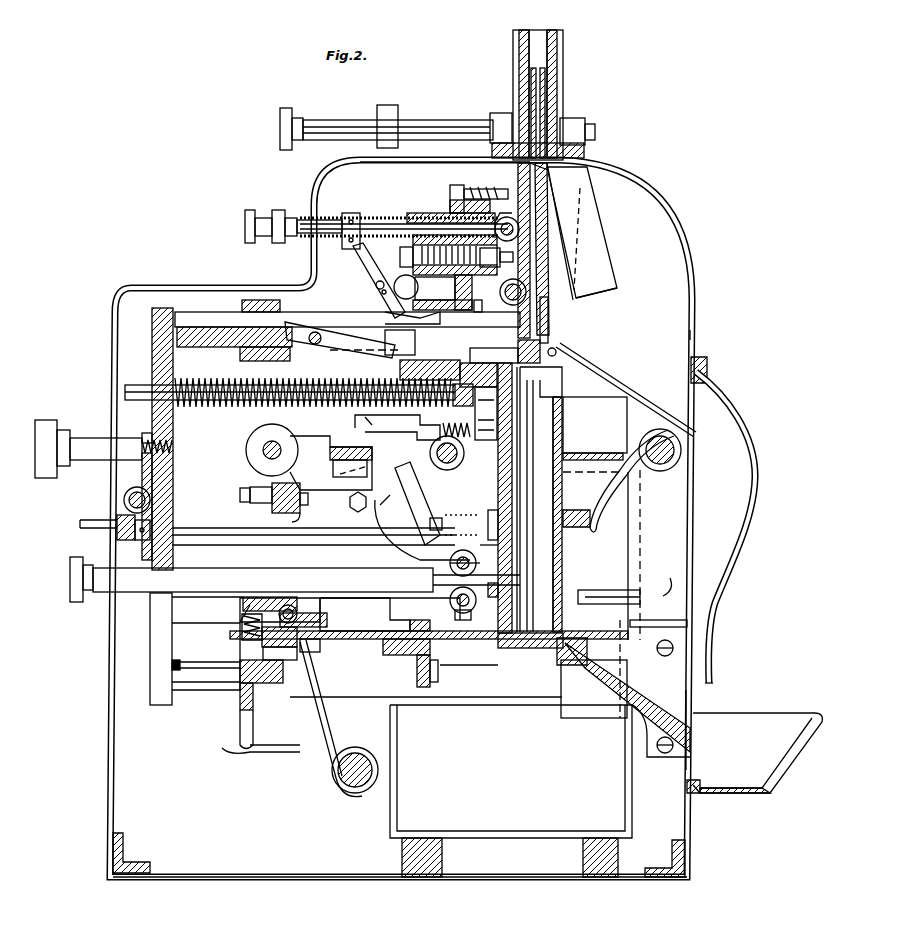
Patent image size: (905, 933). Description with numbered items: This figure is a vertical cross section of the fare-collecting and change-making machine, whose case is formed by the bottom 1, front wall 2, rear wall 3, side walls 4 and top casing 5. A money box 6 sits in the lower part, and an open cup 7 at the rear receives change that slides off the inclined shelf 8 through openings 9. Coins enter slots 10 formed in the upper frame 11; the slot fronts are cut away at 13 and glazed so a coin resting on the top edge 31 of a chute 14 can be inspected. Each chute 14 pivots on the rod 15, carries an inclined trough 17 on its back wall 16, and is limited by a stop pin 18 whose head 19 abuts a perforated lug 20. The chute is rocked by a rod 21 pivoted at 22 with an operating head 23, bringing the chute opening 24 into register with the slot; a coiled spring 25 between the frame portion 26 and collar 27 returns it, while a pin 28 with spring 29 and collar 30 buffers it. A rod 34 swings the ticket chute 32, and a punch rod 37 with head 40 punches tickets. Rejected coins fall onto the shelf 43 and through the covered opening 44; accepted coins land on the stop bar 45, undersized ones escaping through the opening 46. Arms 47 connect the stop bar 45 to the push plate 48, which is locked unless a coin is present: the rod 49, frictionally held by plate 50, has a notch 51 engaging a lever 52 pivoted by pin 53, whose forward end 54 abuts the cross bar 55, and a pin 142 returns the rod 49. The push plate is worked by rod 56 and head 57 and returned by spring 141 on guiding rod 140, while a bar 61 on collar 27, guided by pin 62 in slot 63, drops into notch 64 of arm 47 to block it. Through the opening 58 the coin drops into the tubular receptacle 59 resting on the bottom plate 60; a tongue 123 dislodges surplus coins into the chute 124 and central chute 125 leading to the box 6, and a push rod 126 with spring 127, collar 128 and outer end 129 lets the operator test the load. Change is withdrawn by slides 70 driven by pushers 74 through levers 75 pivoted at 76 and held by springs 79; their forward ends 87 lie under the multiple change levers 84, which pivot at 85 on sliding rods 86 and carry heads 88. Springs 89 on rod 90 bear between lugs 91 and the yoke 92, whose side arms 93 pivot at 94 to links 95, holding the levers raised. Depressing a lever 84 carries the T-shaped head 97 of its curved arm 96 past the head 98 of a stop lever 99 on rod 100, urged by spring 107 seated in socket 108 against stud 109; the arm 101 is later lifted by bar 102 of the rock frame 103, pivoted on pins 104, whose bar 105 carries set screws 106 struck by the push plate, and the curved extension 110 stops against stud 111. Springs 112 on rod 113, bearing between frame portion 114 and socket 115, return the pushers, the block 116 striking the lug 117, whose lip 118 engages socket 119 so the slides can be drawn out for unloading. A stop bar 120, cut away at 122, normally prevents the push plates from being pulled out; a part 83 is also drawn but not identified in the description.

The bottom 1 is at (236, 878).
The front wall 2 is at (108, 755).
The rear wall 3 is at (695, 335).
The side walls 4 is at (164, 836).
The top casing 5 is at (352, 160).
The money box 6 is at (396, 802).
The open trough or elongated cup 7 is at (775, 715).
The inclined shelf 8 is at (640, 704).
The openings 9 is at (698, 712).
The slots 10 is at (540, 32).
The upper frame 11 is at (528, 85).
The cut away portion with glass window 13 is at (532, 100).
The chutes 14 is at (517, 180).
The rod 15 is at (500, 296).
The back wall 16 is at (560, 231).
The inclined trough 17 is at (549, 210).
The stop pin 18 is at (452, 196).
The head 19 is at (452, 190).
The perforated lug 20 is at (478, 188).
The rod 21 is at (380, 220).
The pivot 22 is at (548, 232).
The operating head 23 is at (282, 212).
The chute opening 24 is at (540, 166).
The coiled spring 25 is at (395, 218).
The frame portion 26 is at (410, 242).
The collar 27 is at (346, 248).
The pin 28 is at (406, 286).
The coil spring 29 is at (448, 272).
The collar 30 is at (490, 262).
The top edge 31 is at (548, 150).
The chute 32 is at (585, 292).
The rod 34 is at (266, 244).
The punch rod 37 is at (332, 126).
The operating head 40 is at (278, 132).
The inclined shelf 43 is at (615, 390).
The covered opening 44 is at (757, 478).
The stopping bar 45 is at (542, 350).
The opening 46 is at (556, 314).
The rearwardly extending arms 47 is at (222, 348).
The push plate 48 is at (166, 427).
The rod 49 is at (312, 316).
The plate 50 is at (240, 304).
The notch 51 is at (290, 320).
The lever 52 is at (335, 352).
The pin 53 is at (310, 345).
The forward end 54 is at (376, 358).
The cross bar 55 is at (428, 386).
The projecting rod 56 is at (82, 436).
The head 57 is at (46, 418).
The opening 58 is at (494, 355).
The cylindrical receptacle 59 is at (548, 414).
The fixed bottom plate 60 is at (522, 640).
The bar 61 is at (364, 266).
The pin 62 is at (378, 289).
The slot 63 is at (383, 280).
The notch 64 is at (384, 318).
The slides 70 is at (462, 642).
The pusher 74 is at (354, 640).
The lever 75 is at (330, 600).
The pivot 76 is at (296, 604).
The coiled spring 79 is at (241, 634).
The bracket 83 is at (207, 643).
The multiple change levers 84 is at (302, 585).
The pivot 85 is at (466, 612).
The rods 86 is at (640, 604).
The forward ends 87 is at (286, 600).
The operating heads 88 is at (75, 603).
The springs 89 is at (664, 507).
The rod 90 is at (662, 428).
The lug 91 is at (580, 508).
The yoke 92 is at (668, 592).
The side arms 93 is at (640, 556).
The pivot 94 is at (450, 563).
The links 95 is at (450, 592).
The curved arm 96 is at (422, 530).
The T-shaped head 97 is at (389, 495).
The T-shaped head 98 is at (417, 503).
The stop lever 99 is at (431, 453).
The rod 100 is at (454, 456).
The arm 101 is at (367, 414).
The bar 102 is at (332, 444).
The rock frame 103 is at (268, 430).
The pins 104 is at (262, 446).
The bar 105 is at (308, 515).
The set screws 106 is at (248, 486).
The coiled spring 107 is at (480, 420).
The socket 108 is at (424, 422).
The stud 109 is at (478, 446).
The curved extension 110 is at (513, 521).
The stud 111 is at (505, 496).
The springs 112 is at (322, 740).
The rod 113 is at (350, 786).
The depending portion 114 is at (232, 750).
The socket 115 is at (312, 648).
The block 116 is at (422, 624).
The depending lug 117 is at (388, 612).
The lip 118 is at (398, 656).
The socket 119 is at (400, 678).
The stop bar 120 is at (116, 520).
The cut away 122 is at (124, 496).
The tongue 123 is at (557, 352).
The chute 124 is at (595, 425).
The central chute 125 is at (594, 669).
The push rod 126 is at (236, 538).
The coiled spring 127 is at (512, 560).
The collar 128 is at (434, 516).
The outer end 129 is at (78, 524).
The guiding rod 140 is at (136, 384).
The coiled spring 141 is at (202, 382).
The pin 142 is at (491, 304).